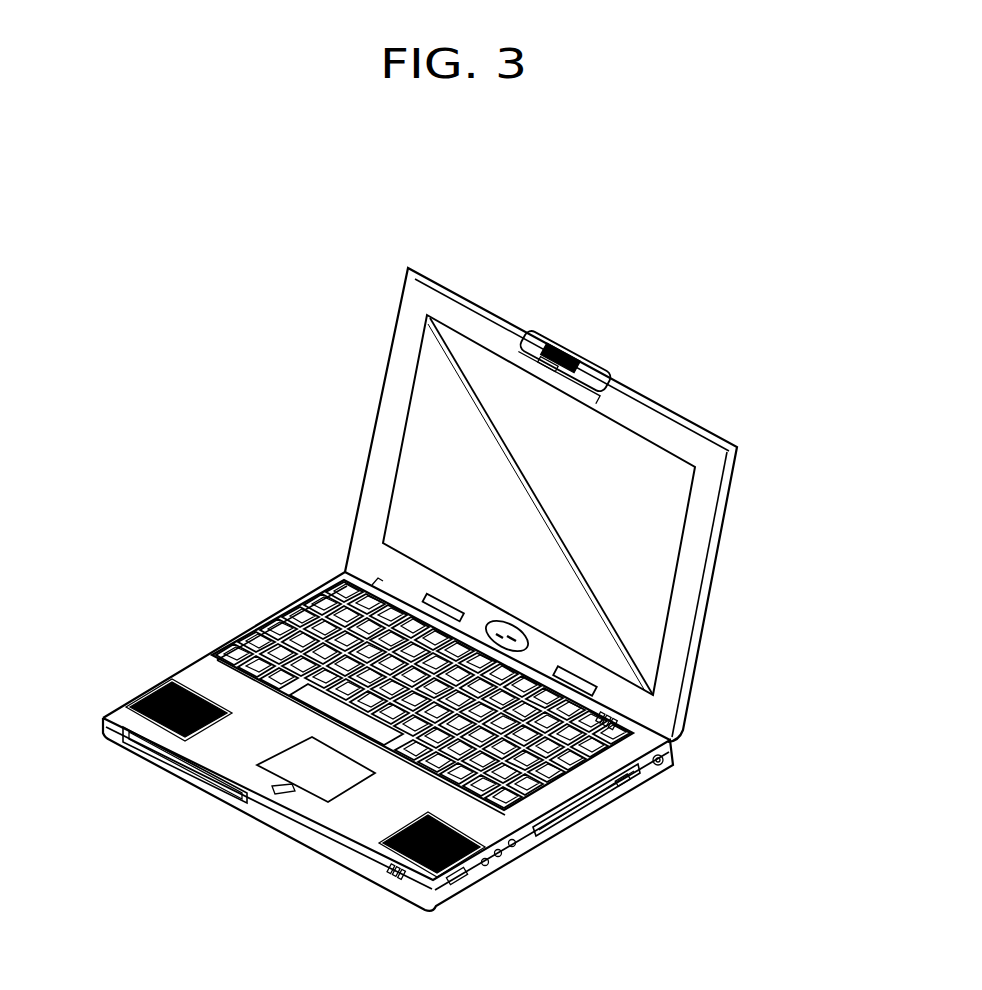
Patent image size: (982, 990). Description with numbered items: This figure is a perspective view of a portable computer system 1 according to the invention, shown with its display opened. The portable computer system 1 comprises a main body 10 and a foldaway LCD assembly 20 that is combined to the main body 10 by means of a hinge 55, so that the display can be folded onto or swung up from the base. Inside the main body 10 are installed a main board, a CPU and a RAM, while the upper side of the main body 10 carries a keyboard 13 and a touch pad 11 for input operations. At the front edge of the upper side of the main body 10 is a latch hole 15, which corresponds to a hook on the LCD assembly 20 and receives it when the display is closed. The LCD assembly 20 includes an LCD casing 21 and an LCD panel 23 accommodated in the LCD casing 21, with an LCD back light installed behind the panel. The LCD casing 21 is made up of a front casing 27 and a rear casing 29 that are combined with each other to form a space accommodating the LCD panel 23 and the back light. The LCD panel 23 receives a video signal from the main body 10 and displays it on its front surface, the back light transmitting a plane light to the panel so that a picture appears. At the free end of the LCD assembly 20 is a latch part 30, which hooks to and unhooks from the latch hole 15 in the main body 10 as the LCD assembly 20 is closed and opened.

The portable computer system 1 is at (162, 438).
The main body 10 is at (364, 889).
The touch pad 11 is at (323, 789).
The keyboard 13 is at (298, 637).
The latch hole 15 is at (273, 790).
The LCD assembly 20 is at (745, 508).
The LCD casing 21 is at (824, 604).
The LCD panel 23 is at (672, 463).
The front casing 27 is at (675, 663).
The rear casing 29 is at (710, 594).
The latch part 30 is at (584, 341).
The hinge 55 is at (443, 597).